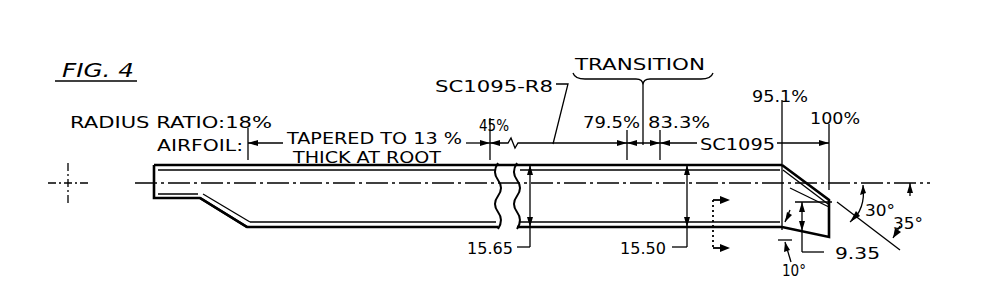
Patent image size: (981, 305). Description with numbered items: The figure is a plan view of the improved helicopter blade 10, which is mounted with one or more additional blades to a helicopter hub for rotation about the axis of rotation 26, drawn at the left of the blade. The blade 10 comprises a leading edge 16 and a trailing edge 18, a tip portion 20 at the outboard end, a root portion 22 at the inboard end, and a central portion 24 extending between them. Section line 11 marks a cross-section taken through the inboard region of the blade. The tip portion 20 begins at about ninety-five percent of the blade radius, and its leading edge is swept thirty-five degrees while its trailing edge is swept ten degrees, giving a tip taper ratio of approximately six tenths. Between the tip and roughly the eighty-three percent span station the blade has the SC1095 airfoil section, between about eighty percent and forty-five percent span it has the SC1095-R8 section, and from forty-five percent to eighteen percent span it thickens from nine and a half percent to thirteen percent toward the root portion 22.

The improved blade 10 is at (148, 249).
The section line 11 is at (230, 247).
The leading edge 16 is at (567, 170).
The trailing edge 18 is at (418, 236).
The tip portion 20 is at (812, 195).
The root portion 22 is at (205, 188).
The central portion 24 is at (541, 222).
The axis of rotation 26 is at (70, 185).